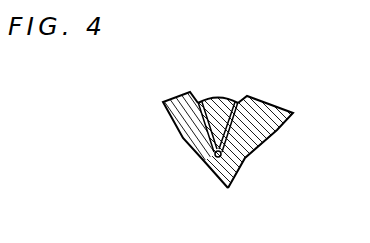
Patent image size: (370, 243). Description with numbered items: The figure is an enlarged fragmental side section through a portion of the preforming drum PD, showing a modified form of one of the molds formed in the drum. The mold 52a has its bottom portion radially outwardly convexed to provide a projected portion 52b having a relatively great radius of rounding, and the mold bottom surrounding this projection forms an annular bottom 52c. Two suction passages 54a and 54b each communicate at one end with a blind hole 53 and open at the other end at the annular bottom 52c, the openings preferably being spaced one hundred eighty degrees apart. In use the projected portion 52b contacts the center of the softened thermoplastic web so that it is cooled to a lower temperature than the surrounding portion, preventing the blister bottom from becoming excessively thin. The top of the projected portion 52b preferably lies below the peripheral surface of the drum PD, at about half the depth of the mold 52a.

The mold 52a is at (238, 100).
The projected portion 52b is at (215, 101).
The annular bottom 52c is at (178, 105).
The blind hole 53 is at (217, 158).
The suction passage 54a is at (213, 126).
The suction passage 54b is at (213, 126).
The preforming drum PD is at (277, 130).